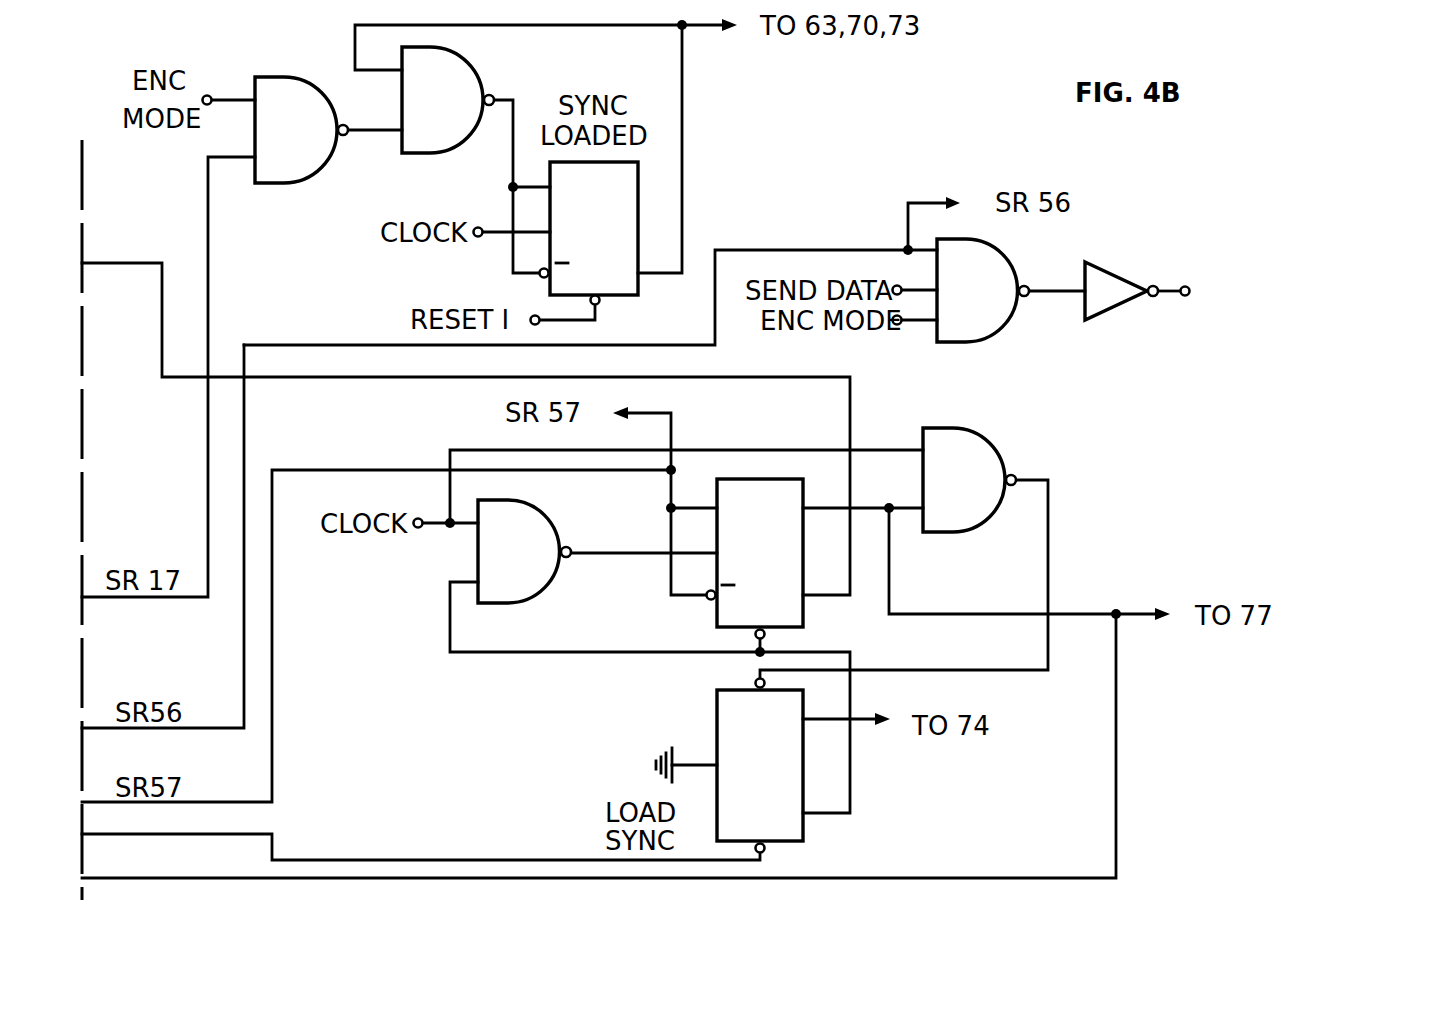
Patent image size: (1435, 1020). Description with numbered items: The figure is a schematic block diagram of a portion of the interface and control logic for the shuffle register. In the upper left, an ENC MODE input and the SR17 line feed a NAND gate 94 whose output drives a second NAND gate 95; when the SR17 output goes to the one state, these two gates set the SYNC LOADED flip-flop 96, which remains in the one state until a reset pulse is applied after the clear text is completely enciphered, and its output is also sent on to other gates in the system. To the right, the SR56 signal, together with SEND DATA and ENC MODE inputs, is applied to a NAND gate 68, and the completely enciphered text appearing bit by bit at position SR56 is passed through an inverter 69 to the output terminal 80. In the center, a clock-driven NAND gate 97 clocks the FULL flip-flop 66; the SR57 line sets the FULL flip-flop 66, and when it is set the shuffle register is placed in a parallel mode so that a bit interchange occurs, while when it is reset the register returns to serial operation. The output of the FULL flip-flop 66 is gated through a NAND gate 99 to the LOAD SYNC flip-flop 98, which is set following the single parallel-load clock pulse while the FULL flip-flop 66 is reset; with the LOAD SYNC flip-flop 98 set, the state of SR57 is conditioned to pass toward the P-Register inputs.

The NAND gate 94 is at (283, 170).
The NAND gate 95 is at (419, 140).
The SYNC LOADED flip-flop 96 is at (545, 291).
The FULL flip-flop 66 is at (722, 613).
The NAND gate 97 is at (535, 575).
The LOAD SYNC flip-flop 98 is at (724, 712).
The NAND gate 99 is at (985, 460).
The NAND gate 68 is at (982, 323).
The inverter 69 is at (1108, 300).
The output terminal 80 is at (1185, 286).